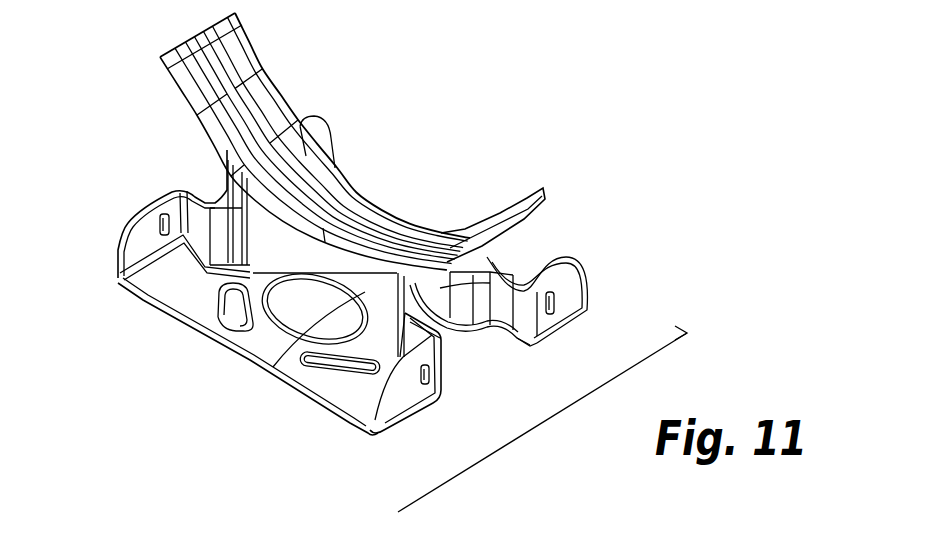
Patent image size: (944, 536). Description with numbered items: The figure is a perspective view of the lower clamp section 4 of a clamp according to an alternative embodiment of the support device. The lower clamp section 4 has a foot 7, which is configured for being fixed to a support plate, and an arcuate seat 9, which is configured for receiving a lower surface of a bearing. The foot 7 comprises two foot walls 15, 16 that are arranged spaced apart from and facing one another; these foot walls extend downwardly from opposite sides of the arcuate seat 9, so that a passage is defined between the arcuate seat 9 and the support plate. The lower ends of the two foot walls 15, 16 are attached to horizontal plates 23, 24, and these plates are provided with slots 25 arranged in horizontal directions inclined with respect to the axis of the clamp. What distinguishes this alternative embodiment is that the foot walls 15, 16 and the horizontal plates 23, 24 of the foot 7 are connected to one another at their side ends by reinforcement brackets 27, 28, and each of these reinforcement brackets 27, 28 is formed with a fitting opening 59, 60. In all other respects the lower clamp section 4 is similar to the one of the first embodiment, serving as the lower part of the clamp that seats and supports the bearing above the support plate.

The lower clamp section 4 is at (422, 150).
The foot 7 is at (538, 424).
The arcuate seat 9 is at (330, 190).
The foot wall 15 is at (273, 375).
The foot wall 16 is at (490, 262).
The horizontal plate 23 is at (358, 412).
The horizontal plate 24 is at (592, 278).
The slot 25 is at (228, 305).
The reinforcement bracket 27 is at (143, 240).
The reinforcement bracket 28 is at (318, 127).
The fitting opening 59 is at (162, 213).
The fitting opening 60 is at (548, 320).